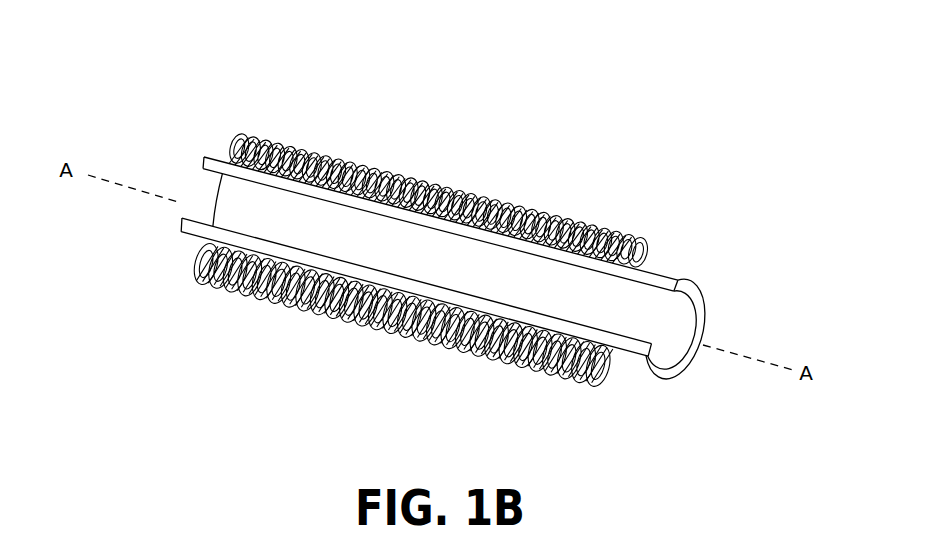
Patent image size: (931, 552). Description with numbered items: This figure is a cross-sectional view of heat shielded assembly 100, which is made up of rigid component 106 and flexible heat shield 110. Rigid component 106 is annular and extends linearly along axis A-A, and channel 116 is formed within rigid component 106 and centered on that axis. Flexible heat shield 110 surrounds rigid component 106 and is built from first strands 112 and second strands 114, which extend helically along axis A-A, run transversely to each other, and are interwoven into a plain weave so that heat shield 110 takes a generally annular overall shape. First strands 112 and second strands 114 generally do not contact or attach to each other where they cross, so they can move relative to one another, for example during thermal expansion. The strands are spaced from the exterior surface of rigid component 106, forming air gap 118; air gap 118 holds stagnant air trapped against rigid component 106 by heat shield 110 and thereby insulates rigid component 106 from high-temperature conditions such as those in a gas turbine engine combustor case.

The heat shielded assembly 100 is at (668, 58).
The rigid component 106 is at (663, 278).
The flexible heat shield 110 is at (488, 143).
The first strands 112 is at (215, 290).
The second strands 114 is at (304, 312).
The channel 116 is at (371, 247).
The air gap 118 is at (222, 153).